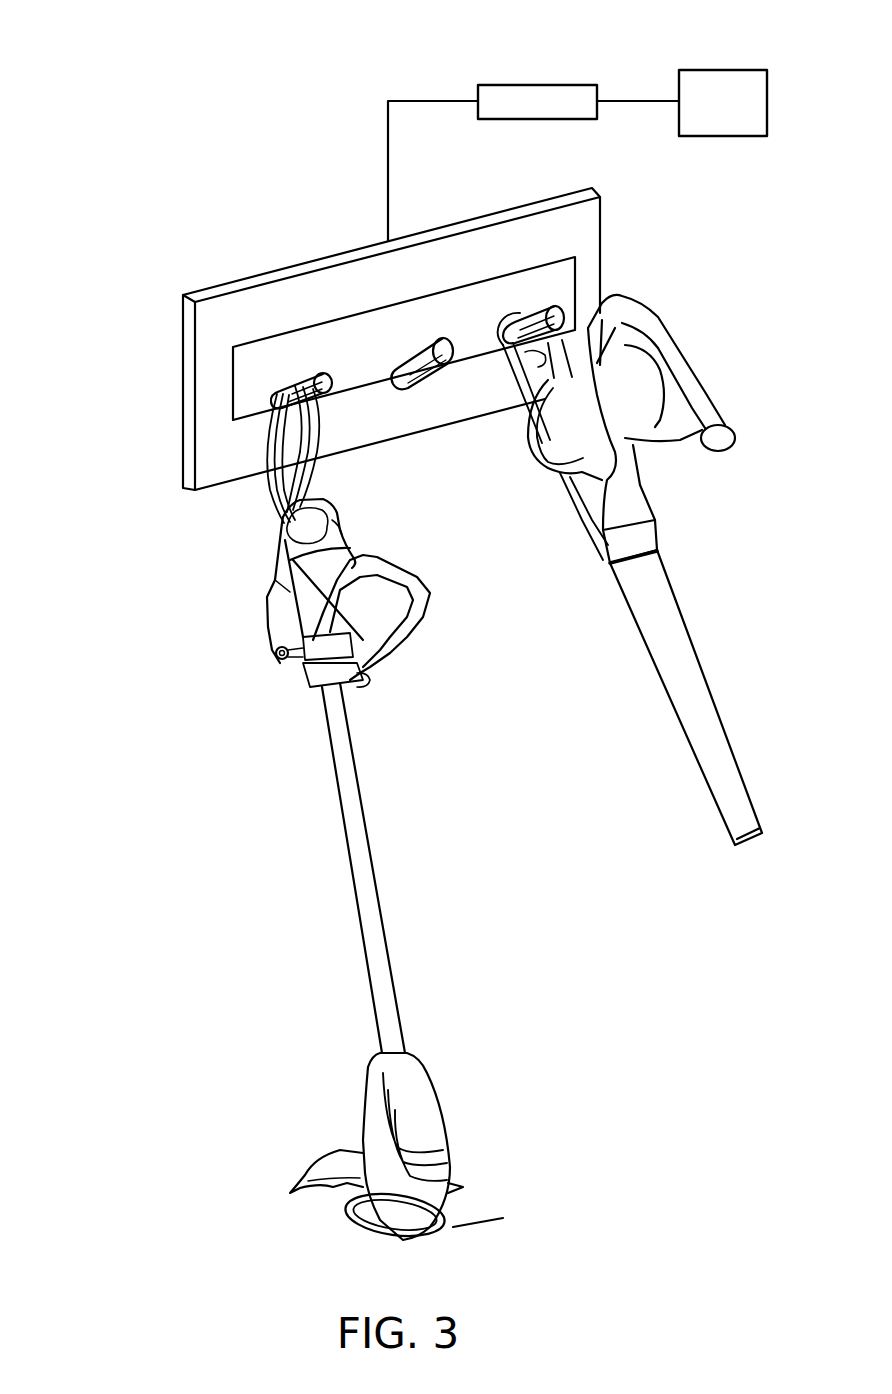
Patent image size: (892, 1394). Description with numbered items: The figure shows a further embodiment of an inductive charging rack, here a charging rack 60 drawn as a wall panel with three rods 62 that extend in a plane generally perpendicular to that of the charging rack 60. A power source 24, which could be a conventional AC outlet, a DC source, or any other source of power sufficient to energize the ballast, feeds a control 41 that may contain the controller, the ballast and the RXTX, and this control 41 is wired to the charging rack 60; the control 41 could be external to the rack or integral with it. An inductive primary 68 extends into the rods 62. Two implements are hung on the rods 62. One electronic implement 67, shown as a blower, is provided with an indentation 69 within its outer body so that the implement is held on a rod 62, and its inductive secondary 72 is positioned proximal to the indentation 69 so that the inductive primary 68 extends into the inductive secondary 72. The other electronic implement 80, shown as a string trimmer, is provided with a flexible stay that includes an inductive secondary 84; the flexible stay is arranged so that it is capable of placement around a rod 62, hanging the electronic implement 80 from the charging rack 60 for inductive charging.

The power source 24 is at (729, 70).
The control 41 is at (538, 85).
The charging rack 60 is at (150, 404).
The rods 62 is at (327, 373).
The blower 67 is at (693, 650).
The inductive primary 68 is at (400, 303).
The indentation 69 is at (513, 360).
The inductive secondary 72 is at (518, 408).
The electronic implement 80 is at (273, 658).
The inductive secondary 84 is at (272, 504).